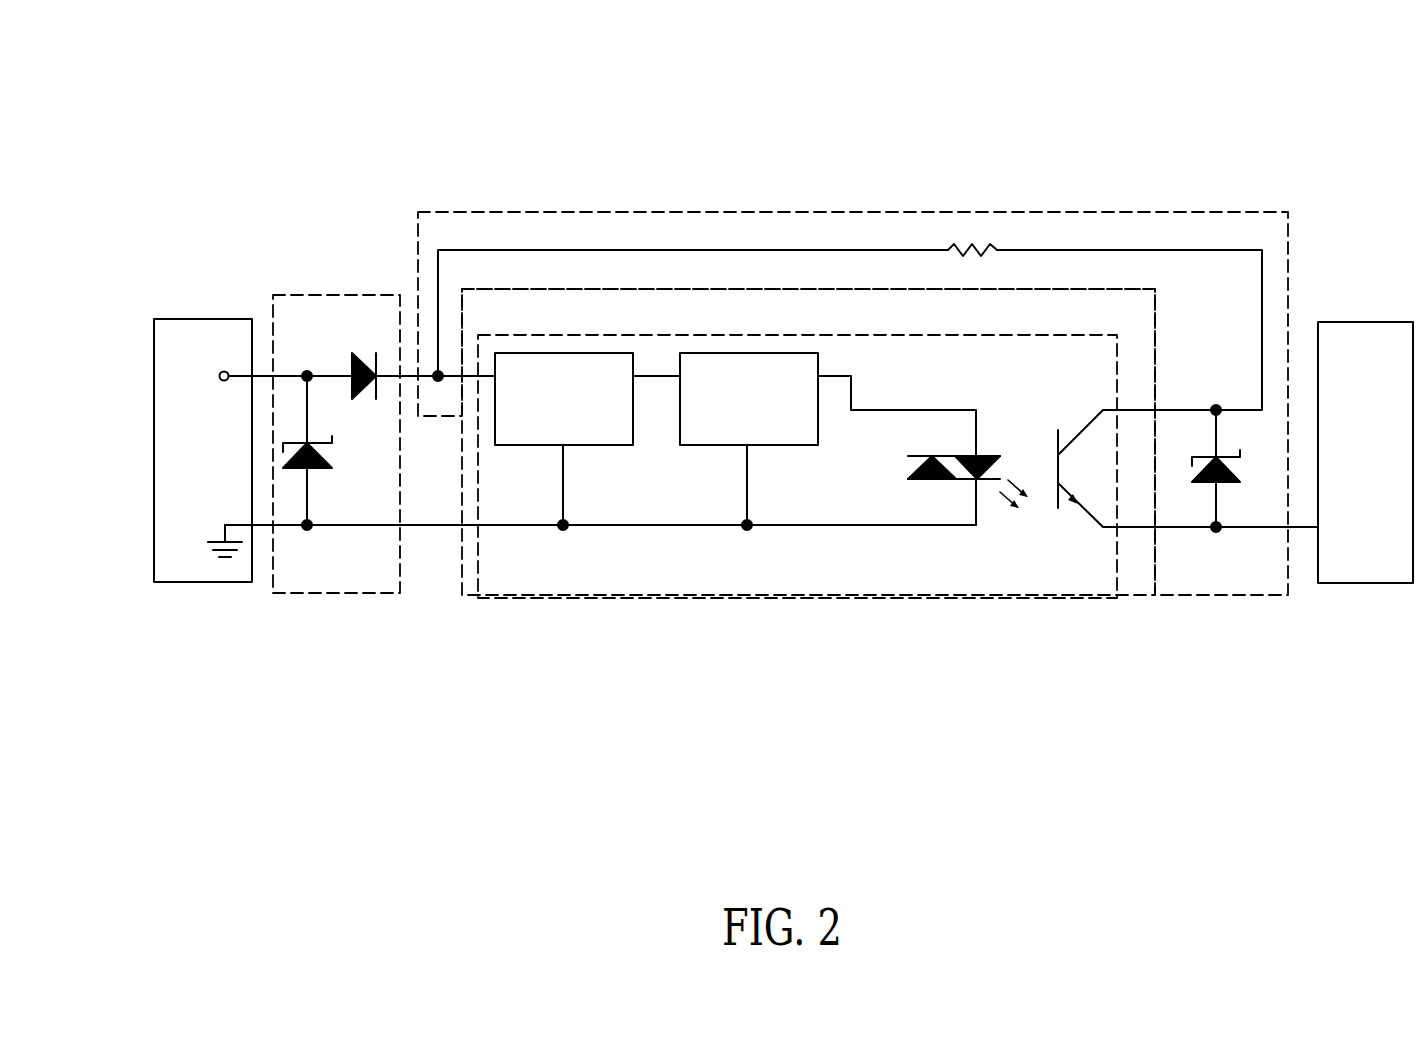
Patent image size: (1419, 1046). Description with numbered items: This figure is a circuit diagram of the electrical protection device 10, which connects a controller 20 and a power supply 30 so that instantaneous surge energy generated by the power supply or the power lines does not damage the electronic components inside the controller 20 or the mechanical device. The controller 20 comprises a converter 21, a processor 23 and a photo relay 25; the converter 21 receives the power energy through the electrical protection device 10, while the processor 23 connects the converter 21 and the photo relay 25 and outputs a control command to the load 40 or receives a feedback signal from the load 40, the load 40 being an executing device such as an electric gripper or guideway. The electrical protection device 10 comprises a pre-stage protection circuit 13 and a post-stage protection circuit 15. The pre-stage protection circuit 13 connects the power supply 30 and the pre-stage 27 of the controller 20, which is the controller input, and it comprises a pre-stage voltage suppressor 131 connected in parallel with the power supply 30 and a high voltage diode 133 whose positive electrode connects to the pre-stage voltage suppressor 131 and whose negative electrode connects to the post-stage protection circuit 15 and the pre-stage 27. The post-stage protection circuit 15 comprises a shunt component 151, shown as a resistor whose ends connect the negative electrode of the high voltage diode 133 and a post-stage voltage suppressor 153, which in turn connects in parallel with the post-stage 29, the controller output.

The electrical protection device 10 is at (153, 130).
The pre-stage protection circuit 13 is at (305, 295).
The pre-stage voltage suppressor 131 is at (318, 470).
The high voltage diode 133 is at (367, 352).
The post-stage protection circuit 15 is at (1218, 211).
The shunt component 151 is at (970, 245).
The post-stage voltage suppressor 153 is at (1222, 482).
The controller 20 is at (638, 597).
The converter 21 is at (565, 352).
The processor 23 is at (750, 352).
The photo relay 25 is at (925, 515).
The pre-stage 27 is at (478, 376).
The post-stage 29 is at (1117, 412).
The power supply 30 is at (204, 319).
The load 40 is at (1368, 322).